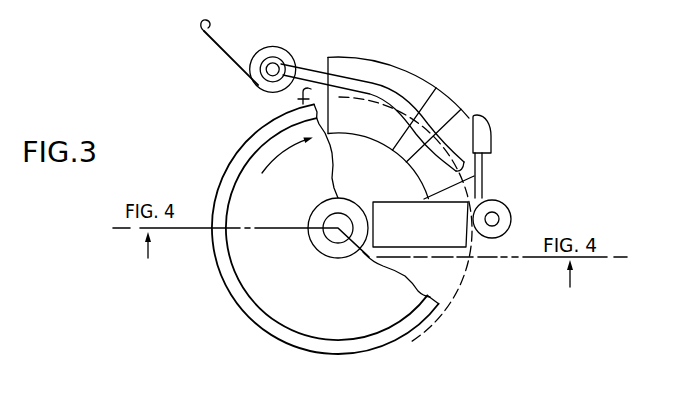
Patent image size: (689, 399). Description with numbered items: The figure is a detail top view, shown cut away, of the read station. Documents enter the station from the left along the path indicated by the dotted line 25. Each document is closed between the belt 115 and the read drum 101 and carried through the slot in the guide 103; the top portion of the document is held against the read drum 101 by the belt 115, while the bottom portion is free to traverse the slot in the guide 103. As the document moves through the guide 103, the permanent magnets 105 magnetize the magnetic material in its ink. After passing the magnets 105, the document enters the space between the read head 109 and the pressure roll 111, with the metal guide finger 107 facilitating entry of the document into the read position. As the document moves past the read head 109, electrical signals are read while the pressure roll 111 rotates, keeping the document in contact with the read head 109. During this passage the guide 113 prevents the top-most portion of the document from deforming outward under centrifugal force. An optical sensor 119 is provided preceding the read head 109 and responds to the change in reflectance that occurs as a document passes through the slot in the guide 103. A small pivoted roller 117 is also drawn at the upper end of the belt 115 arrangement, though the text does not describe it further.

The document path 25 is at (305, 98).
The read drum 101 is at (228, 167).
The guide 103 is at (383, 70).
The permanent magnets 105 is at (440, 100).
The metal guide finger 107 is at (482, 178).
The read head 109 is at (445, 232).
The pressure roll 111 is at (510, 213).
The guide 113 is at (312, 66).
The belt 115 is at (214, 42).
The roller 117 is at (275, 47).
The optical sensor 119 is at (490, 133).